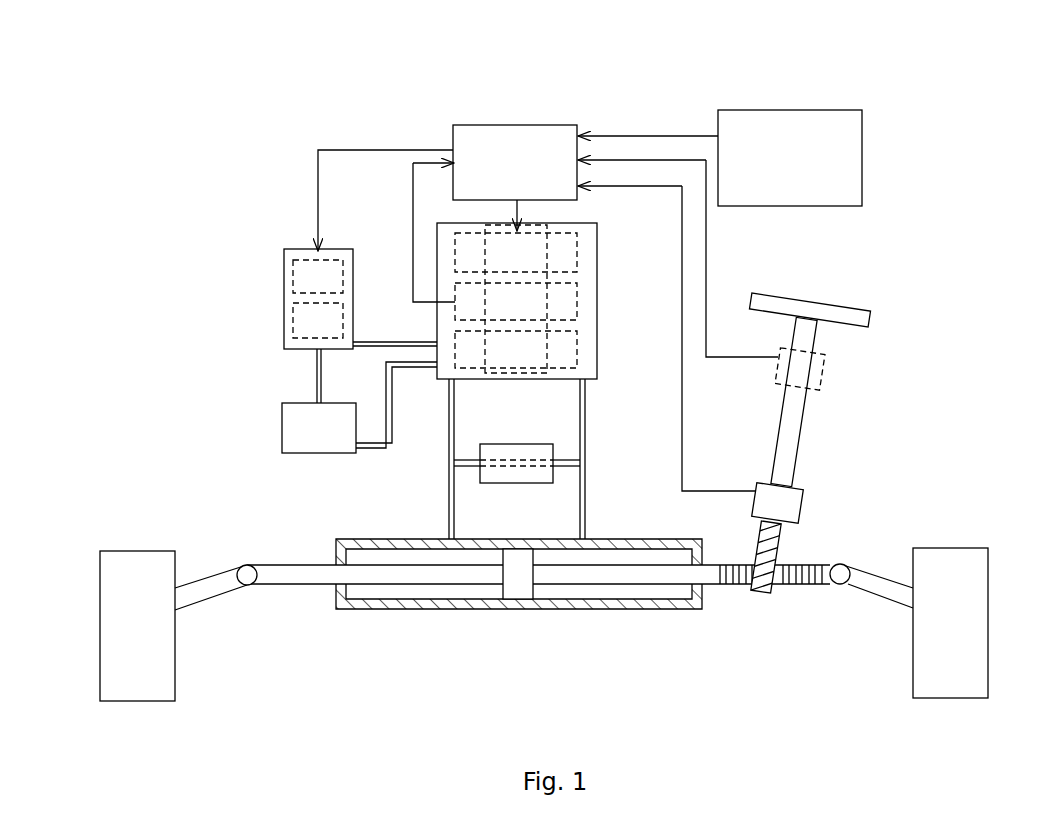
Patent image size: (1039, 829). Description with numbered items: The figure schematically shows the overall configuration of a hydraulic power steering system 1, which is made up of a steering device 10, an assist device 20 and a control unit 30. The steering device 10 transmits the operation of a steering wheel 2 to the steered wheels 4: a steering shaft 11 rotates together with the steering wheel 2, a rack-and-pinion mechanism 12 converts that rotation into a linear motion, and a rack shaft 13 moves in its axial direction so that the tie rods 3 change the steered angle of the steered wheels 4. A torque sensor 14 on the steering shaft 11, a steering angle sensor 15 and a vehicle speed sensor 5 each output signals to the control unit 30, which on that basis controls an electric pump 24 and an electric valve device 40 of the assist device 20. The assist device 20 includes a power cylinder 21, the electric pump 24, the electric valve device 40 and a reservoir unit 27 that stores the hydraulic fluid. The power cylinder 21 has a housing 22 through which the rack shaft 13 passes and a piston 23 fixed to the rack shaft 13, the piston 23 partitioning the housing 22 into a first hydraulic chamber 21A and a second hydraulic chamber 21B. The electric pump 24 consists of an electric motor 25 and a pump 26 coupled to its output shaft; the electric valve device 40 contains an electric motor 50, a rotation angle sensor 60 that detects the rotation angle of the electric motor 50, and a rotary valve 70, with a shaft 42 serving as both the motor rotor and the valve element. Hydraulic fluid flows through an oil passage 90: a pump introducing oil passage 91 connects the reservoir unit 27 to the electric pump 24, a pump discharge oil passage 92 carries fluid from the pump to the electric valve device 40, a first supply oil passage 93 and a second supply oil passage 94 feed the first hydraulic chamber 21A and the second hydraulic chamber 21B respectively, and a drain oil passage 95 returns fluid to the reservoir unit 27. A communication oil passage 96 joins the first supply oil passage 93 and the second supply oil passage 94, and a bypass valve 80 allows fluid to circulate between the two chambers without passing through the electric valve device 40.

The hydraulic power steering system 1 is at (170, 112).
The steering wheel 2 is at (850, 302).
The tie rods 3 is at (210, 598).
The steered wheels 4 is at (138, 701).
The vehicle speed sensor 5 is at (782, 110).
The steering device 10 is at (827, 479).
The steering shaft 11 is at (802, 412).
The rack-and-pinion mechanism 12 is at (758, 620).
The rack shaft 13 is at (718, 585).
The torque sensor 14 is at (800, 514).
The steering angle sensor 15 is at (822, 374).
The assist device 20 is at (270, 242).
The power cylinder 21 is at (538, 618).
The first hydraulic chamber 21A is at (612, 592).
The second hydraulic chamber 21B is at (403, 593).
The housing 22 is at (458, 603).
The piston 23 is at (522, 600).
The electric pump 24 is at (305, 249).
The electric motor 25 is at (286, 272).
The pump 26 is at (286, 318).
The reservoir unit 27 is at (316, 453).
The control unit 30 is at (517, 125).
The electric valve device 40 is at (447, 223).
The shaft 42 is at (544, 350).
The electric motor 50 is at (577, 245).
The rotation angle sensor 60 is at (577, 296).
The rotary valve 70 is at (577, 346).
The bypass valve 80 is at (517, 483).
The oil passage 90 is at (604, 436).
The pump introducing oil passage 91 is at (316, 378).
The pump discharge oil passage 92 is at (395, 342).
The first supply oil passage 93 is at (585, 514).
The second supply oil passage 94 is at (449, 514).
The drain oil passage 95 is at (372, 448).
The communication oil passage 96 is at (468, 467).